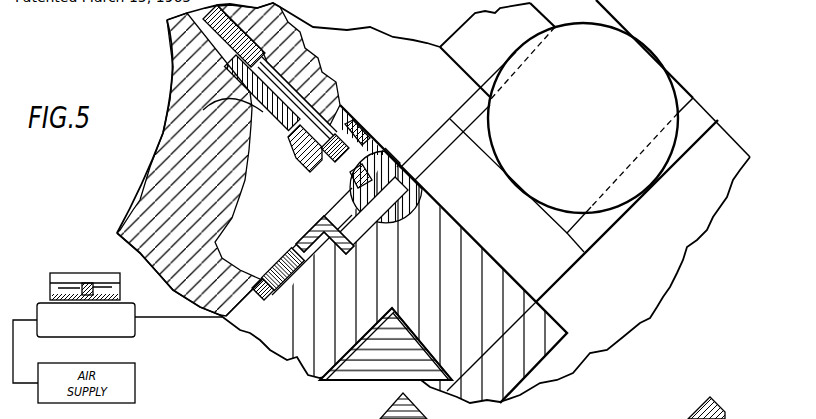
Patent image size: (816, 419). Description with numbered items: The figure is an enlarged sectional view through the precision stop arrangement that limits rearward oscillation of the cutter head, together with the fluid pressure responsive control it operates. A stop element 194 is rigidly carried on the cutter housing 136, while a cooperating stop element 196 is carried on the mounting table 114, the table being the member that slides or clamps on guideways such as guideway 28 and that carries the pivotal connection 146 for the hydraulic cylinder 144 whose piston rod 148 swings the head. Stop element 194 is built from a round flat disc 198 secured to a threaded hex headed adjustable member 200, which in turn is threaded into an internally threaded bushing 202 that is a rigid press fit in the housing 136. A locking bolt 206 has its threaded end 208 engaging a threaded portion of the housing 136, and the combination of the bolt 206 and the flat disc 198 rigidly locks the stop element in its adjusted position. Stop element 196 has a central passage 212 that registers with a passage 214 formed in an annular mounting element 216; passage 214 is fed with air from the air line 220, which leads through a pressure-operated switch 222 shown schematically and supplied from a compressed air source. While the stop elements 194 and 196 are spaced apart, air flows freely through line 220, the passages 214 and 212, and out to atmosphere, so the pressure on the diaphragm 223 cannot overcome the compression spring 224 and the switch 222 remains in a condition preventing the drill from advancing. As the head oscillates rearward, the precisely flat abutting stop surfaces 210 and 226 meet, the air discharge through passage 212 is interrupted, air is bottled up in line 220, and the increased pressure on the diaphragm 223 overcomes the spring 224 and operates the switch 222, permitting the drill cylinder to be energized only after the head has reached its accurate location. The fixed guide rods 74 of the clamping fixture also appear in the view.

The guideway 28 is at (340, 385).
The guide rod 74 is at (381, 406).
The mounting table 114 is at (467, 247).
The housing 136 is at (140, 203).
The hydraulic cylinder 144 is at (656, 306).
The pivotal connection 146 is at (636, 60).
The piston rod 148 is at (460, 57).
The stop element 194 is at (354, 105).
The stop element 196 is at (367, 138).
The round flat disc 198 is at (323, 163).
The threaded hex headed adjustable member 200 is at (300, 150).
The internally threaded bushing 202 is at (178, 133).
The locking bolt 206 is at (326, 116).
The threaded end 208 is at (170, 52).
The stop surface 210 is at (350, 180).
The central passage 212 is at (408, 150).
The passage 214 is at (392, 195).
The annular mounting element 216 is at (310, 215).
The air line 220 is at (257, 283).
The pressure-operated switch 222 is at (66, 275).
The diaphragm 223 is at (100, 300).
The compression spring 224 is at (100, 287).
The stop surface 226 is at (357, 127).